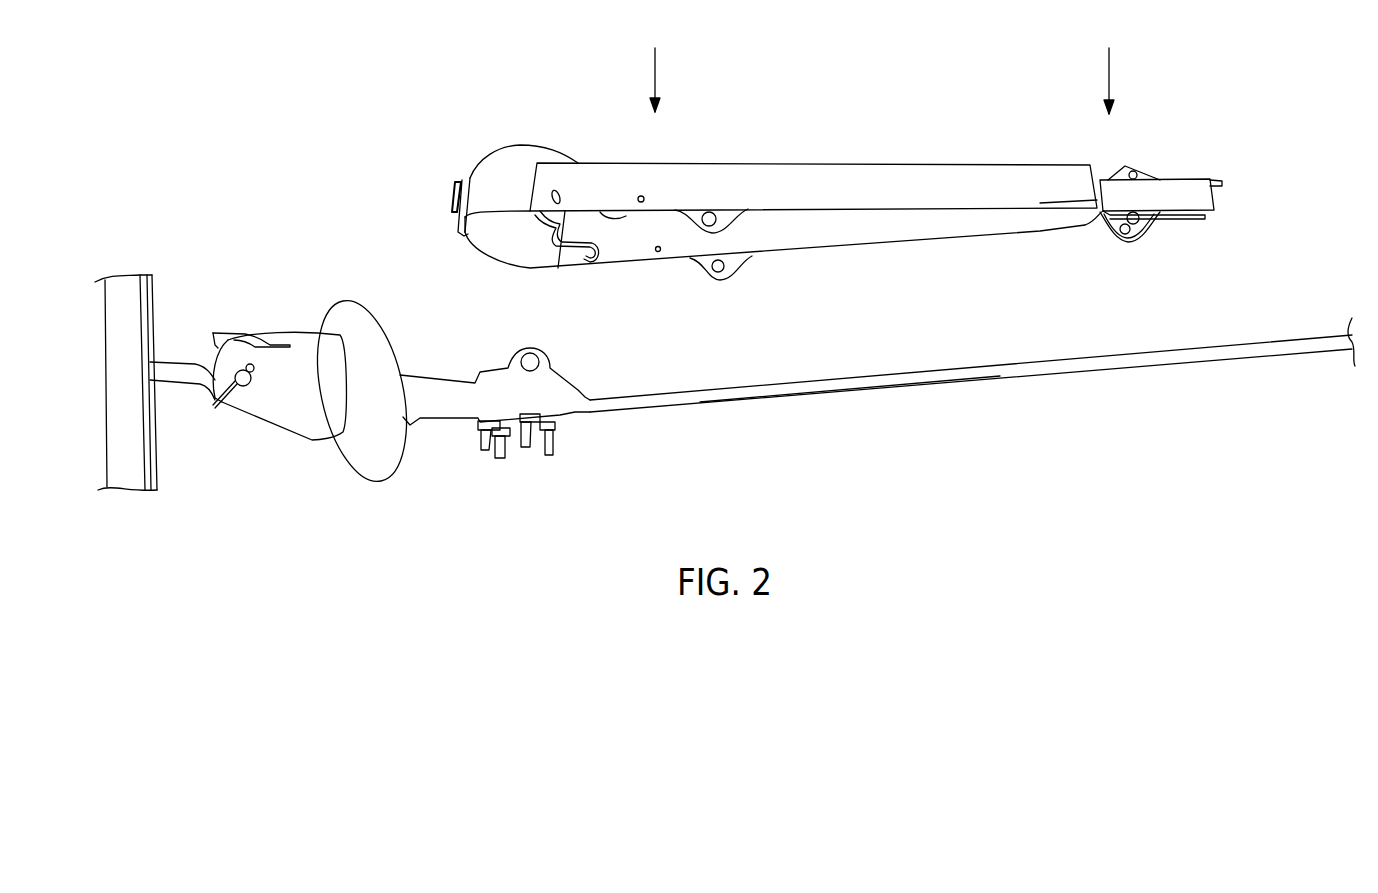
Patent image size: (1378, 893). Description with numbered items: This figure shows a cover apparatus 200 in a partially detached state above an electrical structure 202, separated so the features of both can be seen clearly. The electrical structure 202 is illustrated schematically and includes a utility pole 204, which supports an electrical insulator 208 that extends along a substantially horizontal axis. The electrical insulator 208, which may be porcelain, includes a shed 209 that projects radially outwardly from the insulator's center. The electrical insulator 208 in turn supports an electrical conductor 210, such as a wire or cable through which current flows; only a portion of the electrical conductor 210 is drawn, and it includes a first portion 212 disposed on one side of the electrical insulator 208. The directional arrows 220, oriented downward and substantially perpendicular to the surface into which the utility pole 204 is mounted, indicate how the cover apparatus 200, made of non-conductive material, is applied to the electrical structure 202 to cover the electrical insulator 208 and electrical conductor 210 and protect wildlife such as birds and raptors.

The cover apparatus 200 is at (408, 118).
The electrical structure 202 is at (725, 367).
The utility pole 204 is at (152, 455).
The electrical insulator 208 is at (474, 487).
The shed 209 is at (378, 470).
The electrical conductor 210 is at (976, 380).
The first portion 212 is at (824, 396).
The directional arrows 220 is at (656, 76).